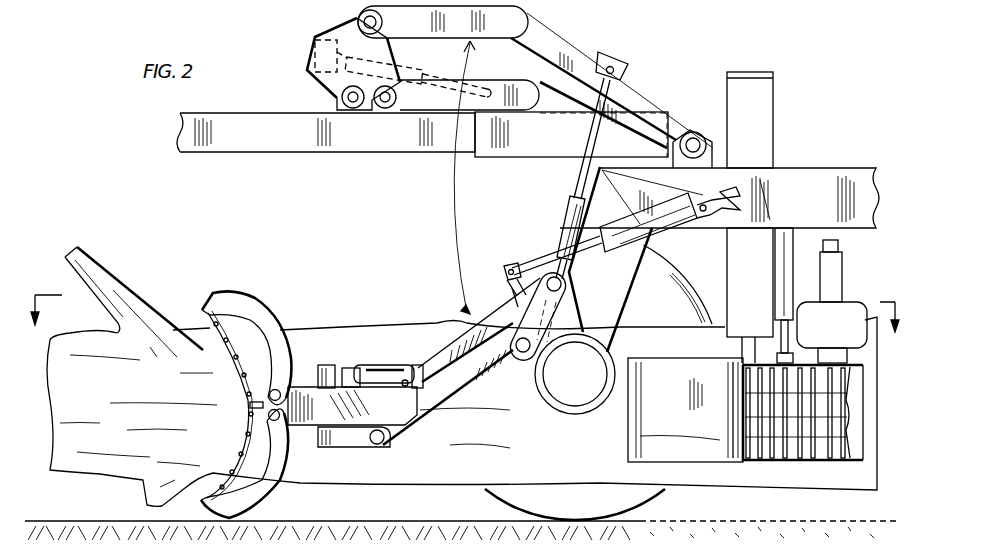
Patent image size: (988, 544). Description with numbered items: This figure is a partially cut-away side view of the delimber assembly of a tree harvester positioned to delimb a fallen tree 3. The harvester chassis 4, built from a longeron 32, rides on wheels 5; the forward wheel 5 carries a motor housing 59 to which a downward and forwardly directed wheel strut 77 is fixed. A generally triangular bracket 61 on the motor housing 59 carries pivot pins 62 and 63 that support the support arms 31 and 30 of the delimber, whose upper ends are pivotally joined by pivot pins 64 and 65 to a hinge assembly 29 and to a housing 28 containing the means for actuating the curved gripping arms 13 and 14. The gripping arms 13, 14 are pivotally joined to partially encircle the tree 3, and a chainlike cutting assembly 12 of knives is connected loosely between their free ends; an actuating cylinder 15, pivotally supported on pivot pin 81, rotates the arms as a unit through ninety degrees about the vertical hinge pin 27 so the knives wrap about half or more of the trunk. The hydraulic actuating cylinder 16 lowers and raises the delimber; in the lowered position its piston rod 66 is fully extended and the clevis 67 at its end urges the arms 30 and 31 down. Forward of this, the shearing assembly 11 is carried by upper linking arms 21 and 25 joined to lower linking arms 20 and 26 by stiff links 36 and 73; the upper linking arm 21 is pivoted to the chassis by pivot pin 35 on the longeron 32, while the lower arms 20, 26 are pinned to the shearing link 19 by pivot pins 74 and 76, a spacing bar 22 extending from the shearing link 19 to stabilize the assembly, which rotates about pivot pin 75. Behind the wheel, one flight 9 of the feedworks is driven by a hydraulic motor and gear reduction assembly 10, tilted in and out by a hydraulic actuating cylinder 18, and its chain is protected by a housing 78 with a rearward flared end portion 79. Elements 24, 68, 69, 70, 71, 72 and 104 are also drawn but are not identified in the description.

The tree 3 is at (303, 327).
The chassis 4 is at (832, 170).
The wheel 5 is at (668, 490).
The flight 9 is at (830, 466).
The hydraulic motor and gear reduction assembly 10 is at (860, 307).
The shearing assembly 11 is at (528, 160).
The cutting assembly 12 is at (243, 435).
The gripping arm 13 is at (267, 308).
The gripping arm 14 is at (277, 495).
The actuating cylinder 15 is at (388, 370).
The hydraulic actuating cylinder 16 is at (670, 232).
The hydraulic actuating cylinder 18 is at (788, 228).
The shearing link 19 is at (343, 25).
The lower linking arm 20 is at (493, 36).
The upper linking arm 21 is at (653, 100).
The spacing bar 22 is at (310, 57).
The post 24 is at (770, 110).
The upper linking arm 25 is at (553, 132).
The lower linking arm 26 is at (450, 80).
The hinge pin 27 is at (322, 365).
The housing 28 is at (412, 413).
The hinge assembly 29 is at (353, 447).
The support arm 30 is at (479, 313).
The support arm 31 is at (480, 388).
The longeron 32 is at (873, 213).
The pivot pin 35 is at (693, 132).
The stiff link 36 is at (530, 12).
The motor housing 59 is at (555, 410).
The bracket 61 is at (577, 313).
The pivot pin 62 is at (525, 353).
The pivot pin 63 is at (563, 275).
The pivot pin 64 is at (385, 444).
The pivot pin 65 is at (402, 387).
The piston rod 66 is at (537, 260).
The clevis 67 is at (507, 267).
The bracket 68 is at (505, 273).
The lever 69 is at (518, 306).
The hydraulic cylinder 70 is at (569, 209).
The piston rod 71 is at (587, 180).
The bracket 72 is at (612, 80).
The stiff link 73 is at (538, 66).
The pivot pin 74 is at (387, 22).
The pivot pin 75 is at (342, 97).
The pivot pin 76 is at (390, 108).
The wheel strut 77 is at (628, 302).
The housing 78 is at (690, 436).
The rearward flared end portion 79 is at (733, 402).
The pivot pin 81 is at (368, 363).
The axle 104 is at (575, 374).